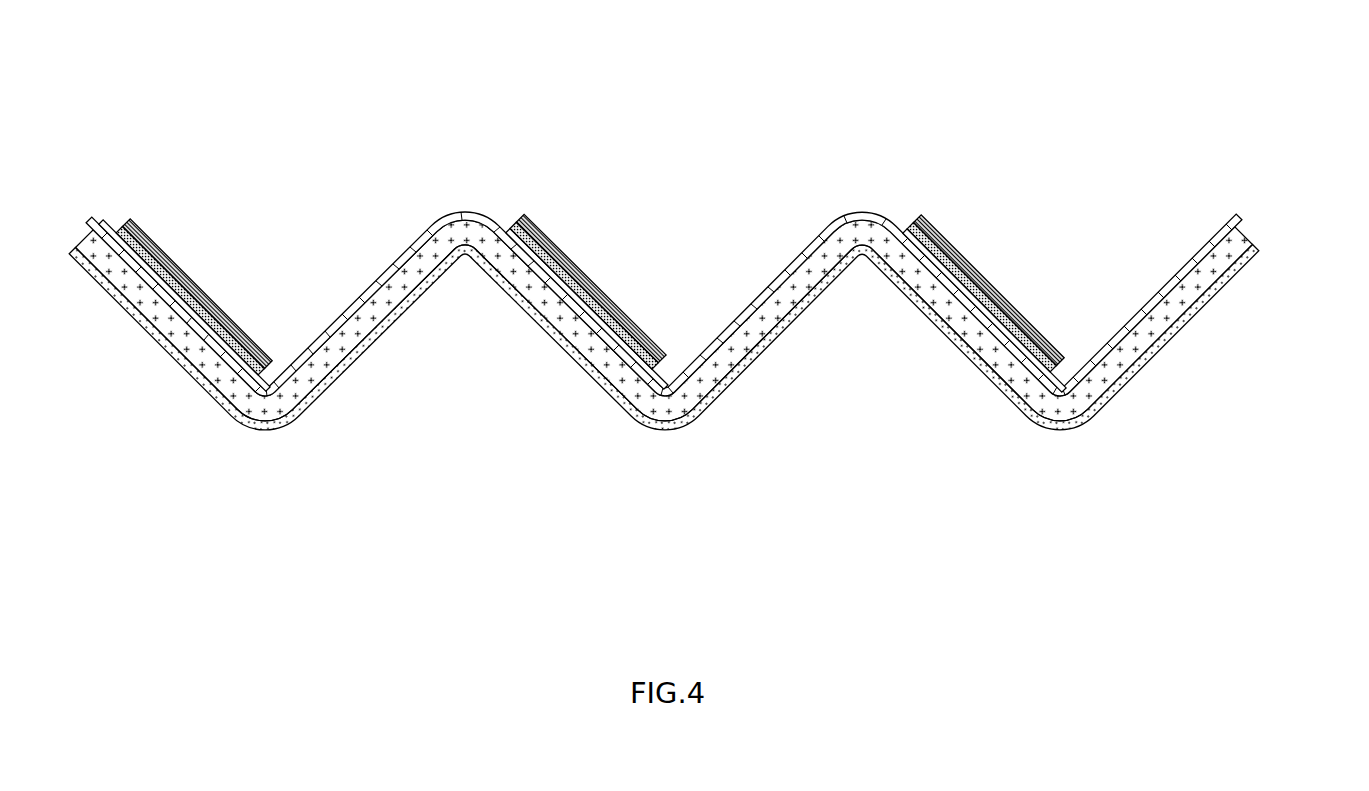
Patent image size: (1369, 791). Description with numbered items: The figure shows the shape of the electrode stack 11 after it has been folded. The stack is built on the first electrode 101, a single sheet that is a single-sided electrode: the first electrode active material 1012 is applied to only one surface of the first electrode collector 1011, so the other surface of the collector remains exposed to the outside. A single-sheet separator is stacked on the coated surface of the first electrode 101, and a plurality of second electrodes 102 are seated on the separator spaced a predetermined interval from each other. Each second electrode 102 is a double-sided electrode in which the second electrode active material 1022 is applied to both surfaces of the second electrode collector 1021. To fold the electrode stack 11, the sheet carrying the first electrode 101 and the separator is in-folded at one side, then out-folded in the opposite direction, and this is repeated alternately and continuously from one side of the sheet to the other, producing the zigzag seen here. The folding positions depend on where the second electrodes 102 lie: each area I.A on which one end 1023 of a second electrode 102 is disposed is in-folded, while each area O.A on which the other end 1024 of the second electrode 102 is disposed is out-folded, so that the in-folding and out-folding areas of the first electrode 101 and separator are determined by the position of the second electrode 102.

The electrode stack 11 is at (703, 220).
The first electrode 101 is at (703, 265).
The first electrode collector 1011 is at (1258, 247).
The first electrode active material 1012 is at (675, 272).
The second electrode 102 is at (589, 242).
The second electrode collector 1021 is at (1066, 360).
The second electrode active material 1022 is at (902, 226).
The one end of second electrode 1023 is at (666, 385).
The other end of second electrode 1024 is at (512, 225).
The out-folding area O.A is at (467, 212).
The in-folding area I.A is at (663, 388).